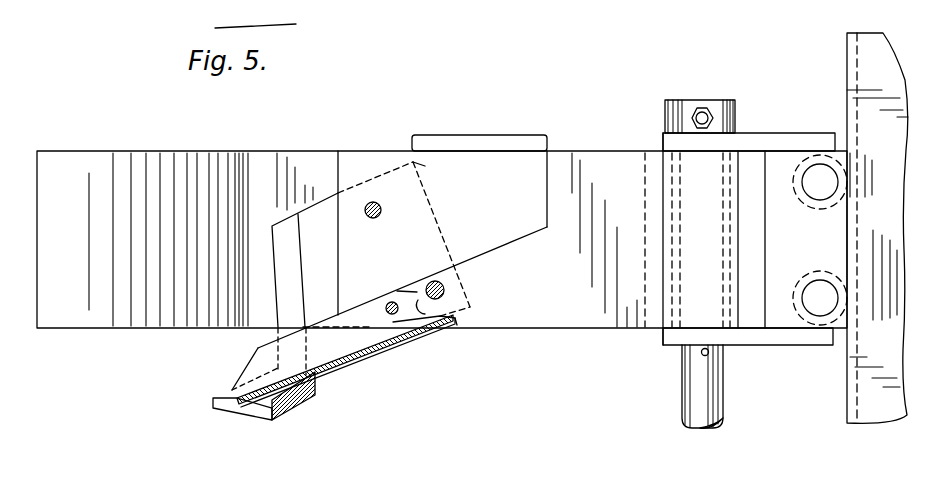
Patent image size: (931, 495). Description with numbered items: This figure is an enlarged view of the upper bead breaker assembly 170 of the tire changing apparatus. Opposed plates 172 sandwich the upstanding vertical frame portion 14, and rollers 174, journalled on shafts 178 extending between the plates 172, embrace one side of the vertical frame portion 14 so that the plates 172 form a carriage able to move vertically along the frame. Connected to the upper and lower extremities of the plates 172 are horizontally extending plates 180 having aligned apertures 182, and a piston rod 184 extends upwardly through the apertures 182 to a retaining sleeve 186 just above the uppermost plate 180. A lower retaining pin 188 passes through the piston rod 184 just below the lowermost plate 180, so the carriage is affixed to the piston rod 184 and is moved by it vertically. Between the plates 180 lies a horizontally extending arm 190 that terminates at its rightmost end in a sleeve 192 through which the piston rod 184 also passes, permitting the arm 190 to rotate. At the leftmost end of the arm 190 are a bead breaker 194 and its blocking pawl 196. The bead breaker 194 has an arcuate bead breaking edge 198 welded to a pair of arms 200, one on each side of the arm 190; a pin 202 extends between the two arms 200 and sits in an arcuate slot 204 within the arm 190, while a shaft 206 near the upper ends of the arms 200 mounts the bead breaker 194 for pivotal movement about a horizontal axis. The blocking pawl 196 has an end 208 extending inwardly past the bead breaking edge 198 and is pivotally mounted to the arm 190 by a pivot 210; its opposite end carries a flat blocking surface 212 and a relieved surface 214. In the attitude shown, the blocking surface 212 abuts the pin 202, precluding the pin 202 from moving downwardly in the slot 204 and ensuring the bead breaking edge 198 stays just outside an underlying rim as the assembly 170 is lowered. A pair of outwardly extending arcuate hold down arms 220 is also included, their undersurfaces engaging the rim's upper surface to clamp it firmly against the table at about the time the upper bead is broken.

The vertical frame portion 14 is at (867, 395).
The upper bead breaker assembly 170 is at (390, 372).
The opposed plates 172 is at (897, 227).
The rollers 174 is at (840, 148).
The shafts 178 is at (820, 293).
The horizontally extending plates 180 is at (753, 141).
The aligned apertures 182 is at (663, 133).
The piston rod 184 is at (695, 397).
The retaining sleeve 186 is at (733, 80).
The retaining pin 188 is at (701, 355).
The horizontally extending arm 190 is at (580, 313).
The sleeve 192 is at (667, 310).
The bead breaker 194 is at (303, 398).
The blocking pawl 196 is at (257, 349).
The bead breaking edge 198 is at (258, 422).
The pair of arms 200 is at (470, 305).
The pin 202 is at (447, 285).
The arcuate slot 204 is at (386, 244).
The shaft 206 is at (381, 206).
The pawl end 208 is at (233, 412).
The pivot 210 is at (387, 305).
The flat blocking surface 212 is at (455, 323).
The relieved surface 214 is at (405, 288).
The hold down arms 220 is at (93, 317).